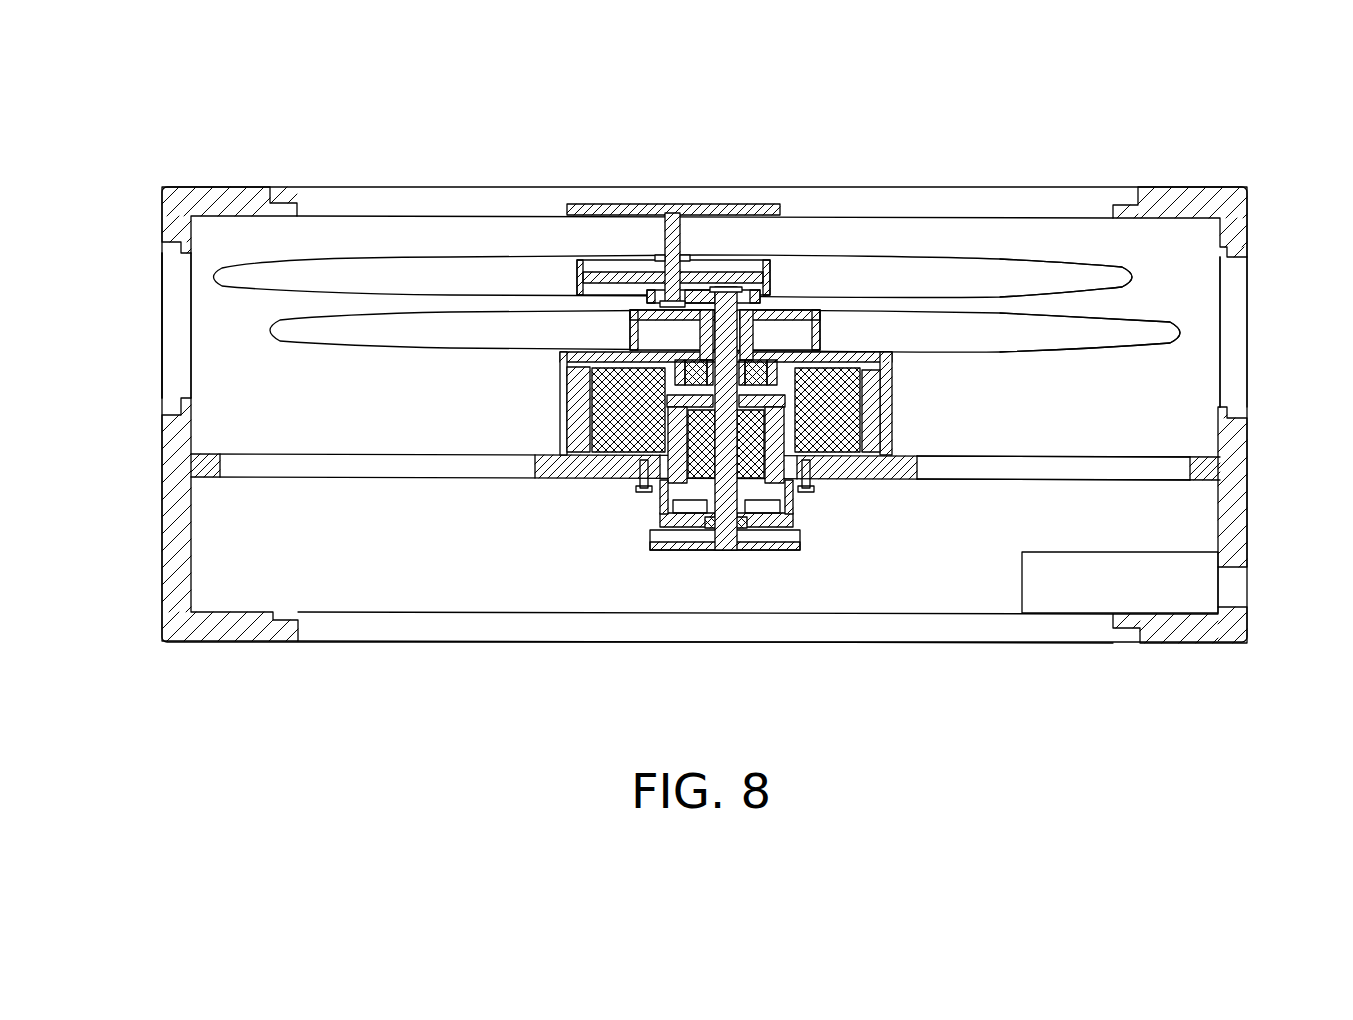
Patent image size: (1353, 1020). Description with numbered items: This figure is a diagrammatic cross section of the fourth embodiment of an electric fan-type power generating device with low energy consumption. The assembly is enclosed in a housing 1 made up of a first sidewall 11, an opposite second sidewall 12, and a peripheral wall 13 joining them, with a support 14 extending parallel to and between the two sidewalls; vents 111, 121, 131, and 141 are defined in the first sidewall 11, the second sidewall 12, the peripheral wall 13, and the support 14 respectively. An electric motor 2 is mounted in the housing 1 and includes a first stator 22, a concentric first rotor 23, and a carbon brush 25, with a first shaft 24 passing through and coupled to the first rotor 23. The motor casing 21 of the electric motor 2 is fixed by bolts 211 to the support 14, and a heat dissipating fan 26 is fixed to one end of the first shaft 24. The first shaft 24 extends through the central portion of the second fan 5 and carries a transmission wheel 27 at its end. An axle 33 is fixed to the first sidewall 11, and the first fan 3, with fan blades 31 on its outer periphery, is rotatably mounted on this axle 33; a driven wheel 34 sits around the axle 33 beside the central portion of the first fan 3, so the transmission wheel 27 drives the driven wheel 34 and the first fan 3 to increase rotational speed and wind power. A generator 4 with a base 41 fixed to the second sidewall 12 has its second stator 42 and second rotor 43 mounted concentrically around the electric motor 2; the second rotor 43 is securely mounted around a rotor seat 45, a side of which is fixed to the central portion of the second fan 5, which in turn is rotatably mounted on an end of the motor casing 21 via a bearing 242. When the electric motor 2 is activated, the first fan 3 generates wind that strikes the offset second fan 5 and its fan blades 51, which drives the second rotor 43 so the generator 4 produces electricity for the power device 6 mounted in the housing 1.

The housing 1 is at (1219, 183).
The first sidewall 11 is at (733, 190).
The vent 111 is at (418, 200).
The second sidewall 12 is at (438, 642).
The vent 121 is at (960, 627).
The peripheral wall 13 is at (162, 545).
The vent 131 is at (176, 305).
The support 14 is at (540, 462).
The vent 141 is at (1100, 470).
The electric motor 2 is at (679, 562).
The motor casing 21 is at (680, 545).
The bolts 211 is at (640, 488).
The first stator 22 is at (790, 505).
The first rotor 23 is at (664, 505).
The first shaft 24 is at (727, 552).
The bearing 242 is at (790, 365).
The carbon brush 25 is at (780, 515).
The heat dissipating fan 26 is at (767, 552).
The transmission wheel 27 is at (746, 292).
The first fan 3 is at (362, 279).
The fan blades 31 is at (1032, 275).
The axle 33 is at (670, 238).
The driven wheel 34 is at (650, 298).
The generator 4 is at (895, 390).
The base 41 is at (806, 490).
The second stator 42 is at (862, 410).
The second rotor 43 is at (560, 410).
The rotor seat 45 is at (560, 383).
The second fan 5 is at (359, 329).
The fan blades 51 is at (1140, 332).
The power device 6 is at (1074, 588).